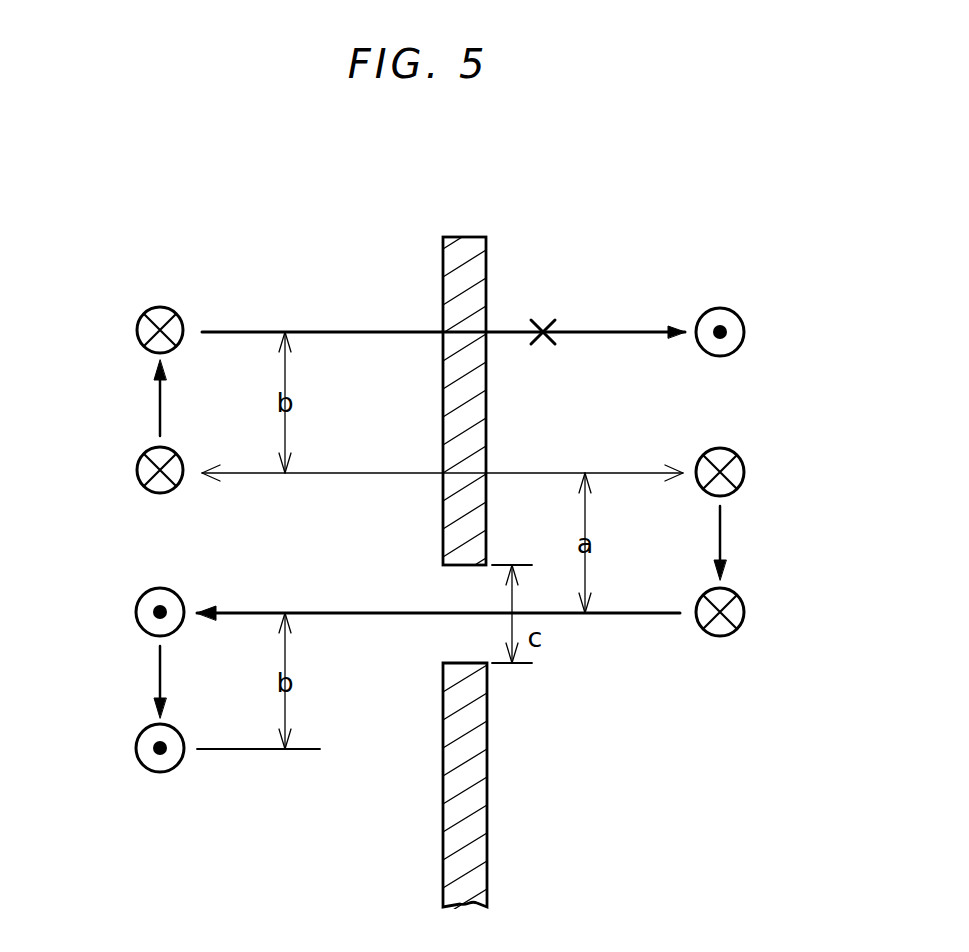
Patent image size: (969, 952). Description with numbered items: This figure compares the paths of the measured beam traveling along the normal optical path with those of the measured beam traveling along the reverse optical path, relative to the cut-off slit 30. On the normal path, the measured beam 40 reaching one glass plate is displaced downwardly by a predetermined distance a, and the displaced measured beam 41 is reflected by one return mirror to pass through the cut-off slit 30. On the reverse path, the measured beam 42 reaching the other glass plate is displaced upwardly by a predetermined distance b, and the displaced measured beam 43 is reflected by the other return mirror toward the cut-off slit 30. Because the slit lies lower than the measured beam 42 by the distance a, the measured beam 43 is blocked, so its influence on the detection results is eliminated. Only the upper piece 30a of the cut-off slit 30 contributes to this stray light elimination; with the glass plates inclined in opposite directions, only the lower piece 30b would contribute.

The cut-off slit 30 is at (492, 204).
The upper piece 30a is at (451, 263).
The lower piece 30b is at (475, 713).
The measured beam 40 is at (730, 448).
The measured beam 41 is at (735, 595).
The measured beam 42 is at (140, 458).
The measured beam 43 is at (140, 318).